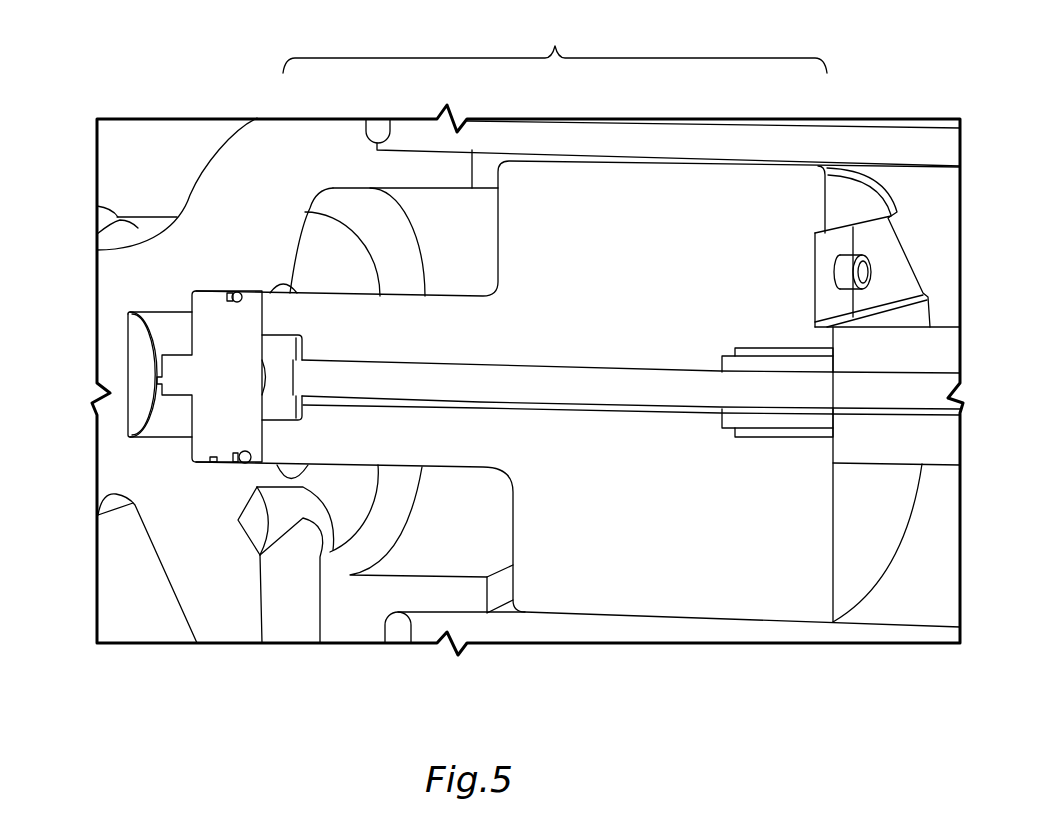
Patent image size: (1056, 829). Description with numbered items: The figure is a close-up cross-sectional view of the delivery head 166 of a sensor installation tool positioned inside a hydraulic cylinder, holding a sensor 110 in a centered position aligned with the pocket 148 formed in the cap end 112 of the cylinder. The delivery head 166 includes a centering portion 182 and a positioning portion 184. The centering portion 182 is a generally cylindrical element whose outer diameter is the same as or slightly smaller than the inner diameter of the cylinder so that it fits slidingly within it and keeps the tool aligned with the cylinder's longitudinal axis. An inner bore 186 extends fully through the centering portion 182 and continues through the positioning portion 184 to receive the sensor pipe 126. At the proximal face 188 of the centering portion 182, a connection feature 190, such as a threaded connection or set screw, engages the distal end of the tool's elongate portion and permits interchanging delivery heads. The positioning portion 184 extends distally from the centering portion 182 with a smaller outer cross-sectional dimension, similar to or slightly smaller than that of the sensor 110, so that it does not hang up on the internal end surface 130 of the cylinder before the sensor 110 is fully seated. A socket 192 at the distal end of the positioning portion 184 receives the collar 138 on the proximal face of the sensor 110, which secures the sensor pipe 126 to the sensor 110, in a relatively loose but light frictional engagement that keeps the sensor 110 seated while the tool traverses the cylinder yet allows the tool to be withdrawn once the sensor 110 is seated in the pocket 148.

The sensor 110 is at (213, 436).
The cap end 112 is at (133, 133).
The sensor pipe 126 is at (923, 385).
The internal end surface 130 is at (297, 258).
The collar 138 is at (277, 350).
The pocket 148 is at (315, 275).
The delivery head 166 is at (621, 72).
The centering portion 182 is at (689, 182).
The positioning portion 184 is at (442, 457).
The inner bore 186 is at (578, 372).
The proximal face 188 is at (880, 525).
The connection feature 190 is at (777, 348).
The socket 192 is at (272, 292).